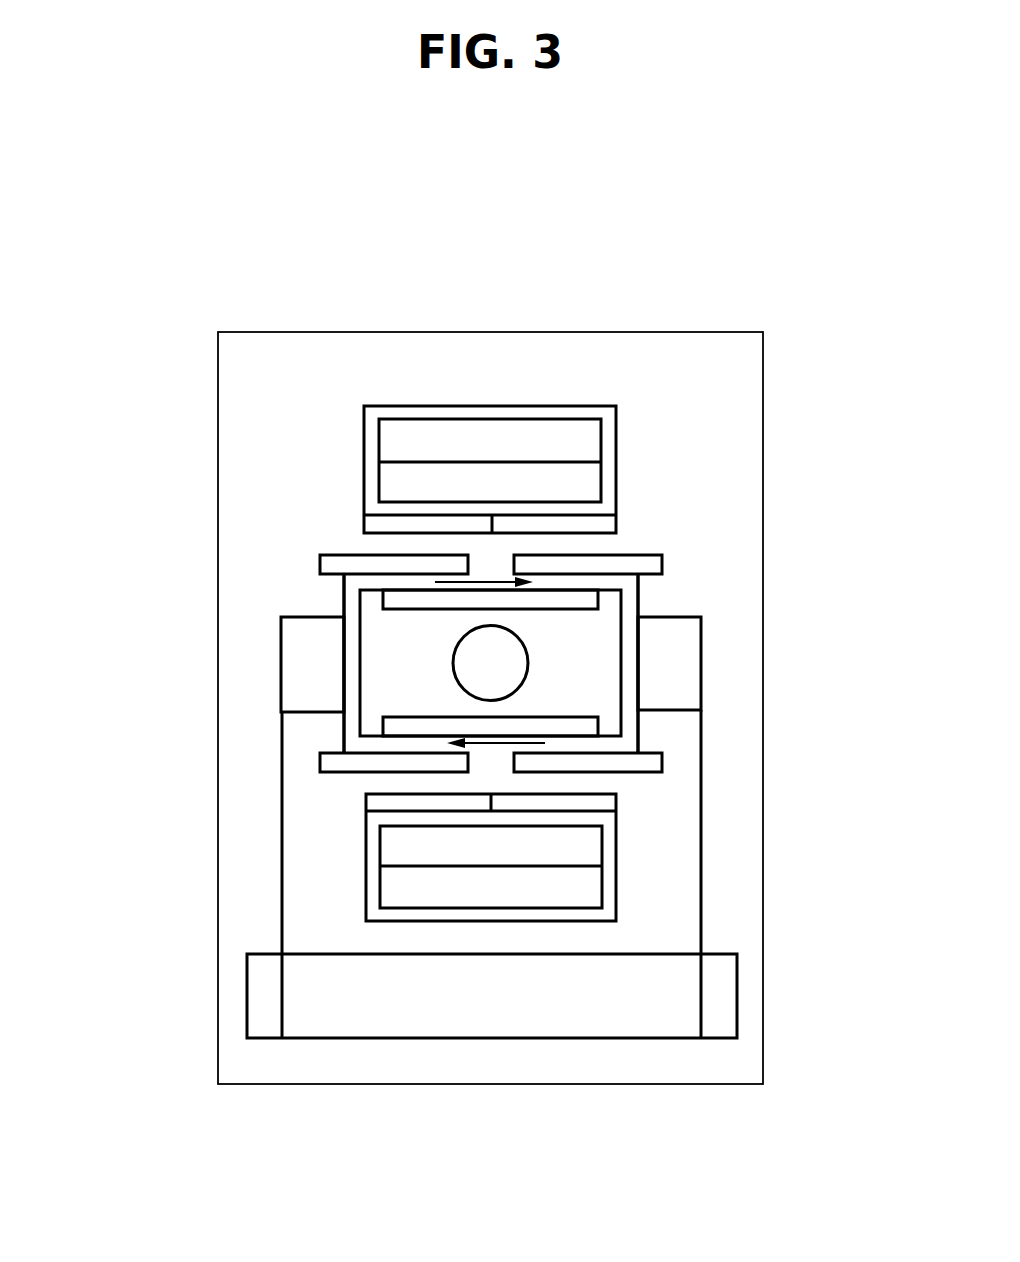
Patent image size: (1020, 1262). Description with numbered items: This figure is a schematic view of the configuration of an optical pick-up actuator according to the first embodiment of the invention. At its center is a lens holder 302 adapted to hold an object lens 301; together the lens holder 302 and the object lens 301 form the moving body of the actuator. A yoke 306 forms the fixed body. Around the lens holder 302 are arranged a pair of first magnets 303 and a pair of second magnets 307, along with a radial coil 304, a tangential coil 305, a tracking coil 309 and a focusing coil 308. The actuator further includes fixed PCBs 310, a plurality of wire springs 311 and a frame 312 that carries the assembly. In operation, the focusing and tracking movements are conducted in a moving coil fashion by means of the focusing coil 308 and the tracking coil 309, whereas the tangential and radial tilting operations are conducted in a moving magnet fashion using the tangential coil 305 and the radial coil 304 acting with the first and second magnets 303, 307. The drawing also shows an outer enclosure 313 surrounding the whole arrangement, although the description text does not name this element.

The object lens 301 is at (467, 667).
The lens holder 302 is at (388, 653).
The first magnets 303 is at (594, 482).
The radial coil 304 is at (607, 523).
The tangential coil 305 is at (364, 487).
The yoke 306 is at (543, 428).
The second magnets 307 is at (385, 601).
The focusing coil 308 is at (639, 608).
The tracking coil 309 is at (340, 556).
The fixed PCBs 310 is at (639, 677).
The wire springs 311 is at (702, 806).
The frame 312 is at (633, 1023).
The outer housing 313 is at (233, 843).